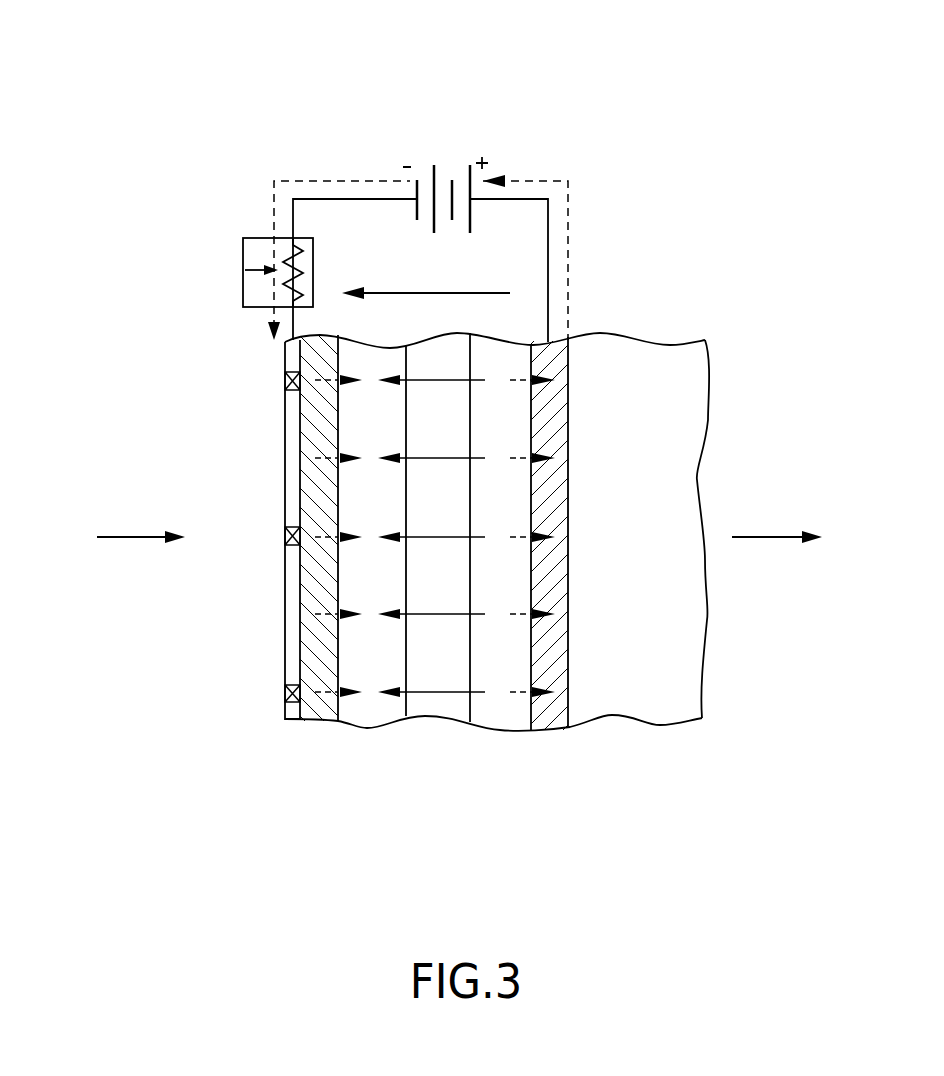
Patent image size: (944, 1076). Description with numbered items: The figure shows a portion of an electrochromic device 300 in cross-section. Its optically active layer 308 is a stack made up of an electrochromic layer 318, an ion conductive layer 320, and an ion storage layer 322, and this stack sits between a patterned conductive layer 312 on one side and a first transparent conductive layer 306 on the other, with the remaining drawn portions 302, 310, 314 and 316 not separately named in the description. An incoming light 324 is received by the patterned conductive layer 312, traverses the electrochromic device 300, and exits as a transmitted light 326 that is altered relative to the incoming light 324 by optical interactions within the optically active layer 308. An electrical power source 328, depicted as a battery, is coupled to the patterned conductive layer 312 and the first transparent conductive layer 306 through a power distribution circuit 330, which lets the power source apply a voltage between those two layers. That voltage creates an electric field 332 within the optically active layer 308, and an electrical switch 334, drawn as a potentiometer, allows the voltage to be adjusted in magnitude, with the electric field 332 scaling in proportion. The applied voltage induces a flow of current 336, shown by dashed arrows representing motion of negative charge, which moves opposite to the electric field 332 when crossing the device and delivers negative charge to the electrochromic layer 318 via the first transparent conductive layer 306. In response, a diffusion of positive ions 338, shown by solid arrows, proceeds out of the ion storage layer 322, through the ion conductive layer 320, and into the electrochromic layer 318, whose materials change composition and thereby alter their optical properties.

The electrochromic device 300 is at (459, 440).
The substrate 302 is at (663, 725).
The first transparent conductive layer 306 is at (548, 731).
The optically active layer 308 is at (415, 586).
The anode current collector layer 310 is at (318, 721).
The patterned conductive layer 312 is at (290, 722).
The contact points 314 is at (286, 694).
The segments 316 is at (269, 380).
The electrochromic layer 318 is at (372, 728).
The ion conductive layer 320 is at (414, 719).
The ion storage layer 322 is at (508, 575).
The incoming light 324 is at (138, 585).
The transmitted light 326 is at (783, 585).
The electrical power source 328 is at (437, 174).
The power distribution circuit 330 is at (548, 230).
The electric field 332 is at (382, 293).
The electrical switch 334 is at (242, 250).
The flow of current 336 is at (352, 757).
The diffusion of positive ions 338 is at (467, 732).